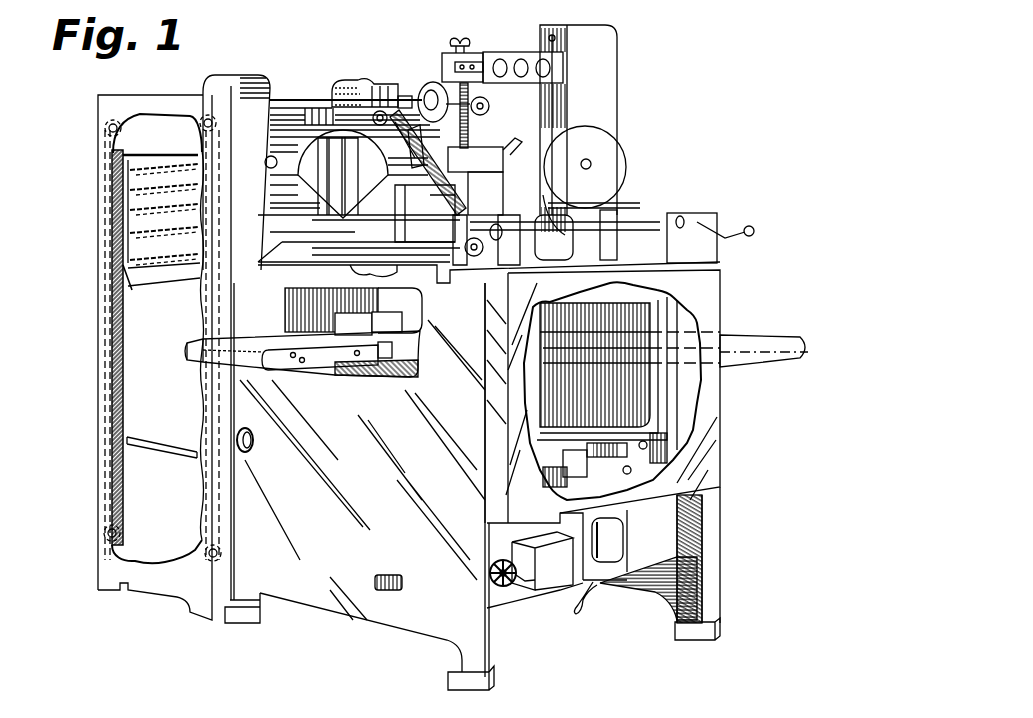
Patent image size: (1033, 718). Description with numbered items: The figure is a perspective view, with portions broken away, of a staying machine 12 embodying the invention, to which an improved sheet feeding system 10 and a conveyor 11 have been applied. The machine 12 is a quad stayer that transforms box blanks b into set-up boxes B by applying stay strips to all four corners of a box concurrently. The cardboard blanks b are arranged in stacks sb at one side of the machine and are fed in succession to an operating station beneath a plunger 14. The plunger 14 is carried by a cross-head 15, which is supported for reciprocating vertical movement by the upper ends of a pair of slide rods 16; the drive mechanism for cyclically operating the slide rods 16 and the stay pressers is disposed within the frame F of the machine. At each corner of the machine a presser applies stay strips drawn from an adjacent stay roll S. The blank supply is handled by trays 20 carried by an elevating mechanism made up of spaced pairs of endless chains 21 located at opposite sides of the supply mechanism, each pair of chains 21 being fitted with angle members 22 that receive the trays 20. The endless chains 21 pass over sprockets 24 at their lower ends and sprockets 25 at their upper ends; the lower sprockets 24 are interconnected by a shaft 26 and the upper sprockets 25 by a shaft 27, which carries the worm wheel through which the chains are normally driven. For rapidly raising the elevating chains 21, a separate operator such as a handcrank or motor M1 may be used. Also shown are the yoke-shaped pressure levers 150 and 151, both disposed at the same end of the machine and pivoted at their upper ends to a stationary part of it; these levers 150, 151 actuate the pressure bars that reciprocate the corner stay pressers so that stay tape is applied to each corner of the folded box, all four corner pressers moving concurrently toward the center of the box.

The sheet feeding system 10 is at (193, 88).
The conveyor 11 is at (345, 356).
The staying machine 12 is at (343, 653).
The plunger 14 is at (469, 108).
The cross-head 15 is at (493, 51).
The slide rods 16 is at (569, 96).
The trays 20 is at (128, 288).
The endless chains 21 is at (205, 302).
The angle members 22 is at (177, 458).
The sprockets 24 is at (108, 531).
The sprockets 25 is at (106, 125).
The shaft 26 is at (176, 554).
The shaft 27 is at (146, 126).
The yoke-shaped lever 150 is at (537, 405).
The yoke-shaped lever 151 is at (690, 388).
The set-up box B is at (397, 334).
The frame F is at (102, 383).
The stay rolls S is at (311, 163).
The motor M1 is at (357, 79).
The box blanks b is at (155, 163).
The stacks sb is at (140, 213).